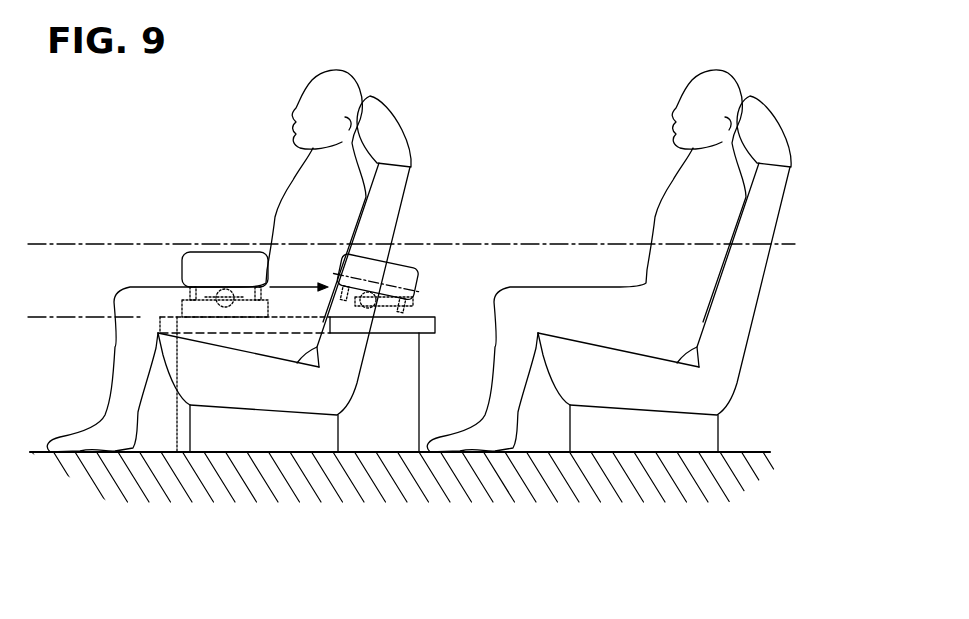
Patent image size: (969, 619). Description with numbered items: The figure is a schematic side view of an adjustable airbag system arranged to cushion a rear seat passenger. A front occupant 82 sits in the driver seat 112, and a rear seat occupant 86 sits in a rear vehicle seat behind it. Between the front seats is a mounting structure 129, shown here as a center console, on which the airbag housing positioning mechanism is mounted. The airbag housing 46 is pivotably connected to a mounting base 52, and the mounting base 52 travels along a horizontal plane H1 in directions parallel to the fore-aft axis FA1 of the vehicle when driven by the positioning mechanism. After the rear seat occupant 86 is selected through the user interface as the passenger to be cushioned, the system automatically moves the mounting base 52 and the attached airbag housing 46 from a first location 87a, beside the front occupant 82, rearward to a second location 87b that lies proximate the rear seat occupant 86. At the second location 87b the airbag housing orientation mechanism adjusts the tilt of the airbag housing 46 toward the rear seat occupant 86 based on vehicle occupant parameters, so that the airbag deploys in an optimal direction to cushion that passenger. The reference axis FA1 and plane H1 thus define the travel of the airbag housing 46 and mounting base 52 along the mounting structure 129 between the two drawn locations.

The occupant 82 is at (340, 70).
The rear seat occupant 86 is at (712, 70).
The driver seat 112 is at (400, 126).
The airbag housing 46 is at (314, 247).
The first location 87a is at (197, 274).
The second location 87b is at (422, 283).
The mounting base 52 is at (190, 308).
The mounting structure 129 is at (395, 421).
The fore-aft axis FA1 is at (63, 239).
The horizontal plane H1 is at (74, 323).